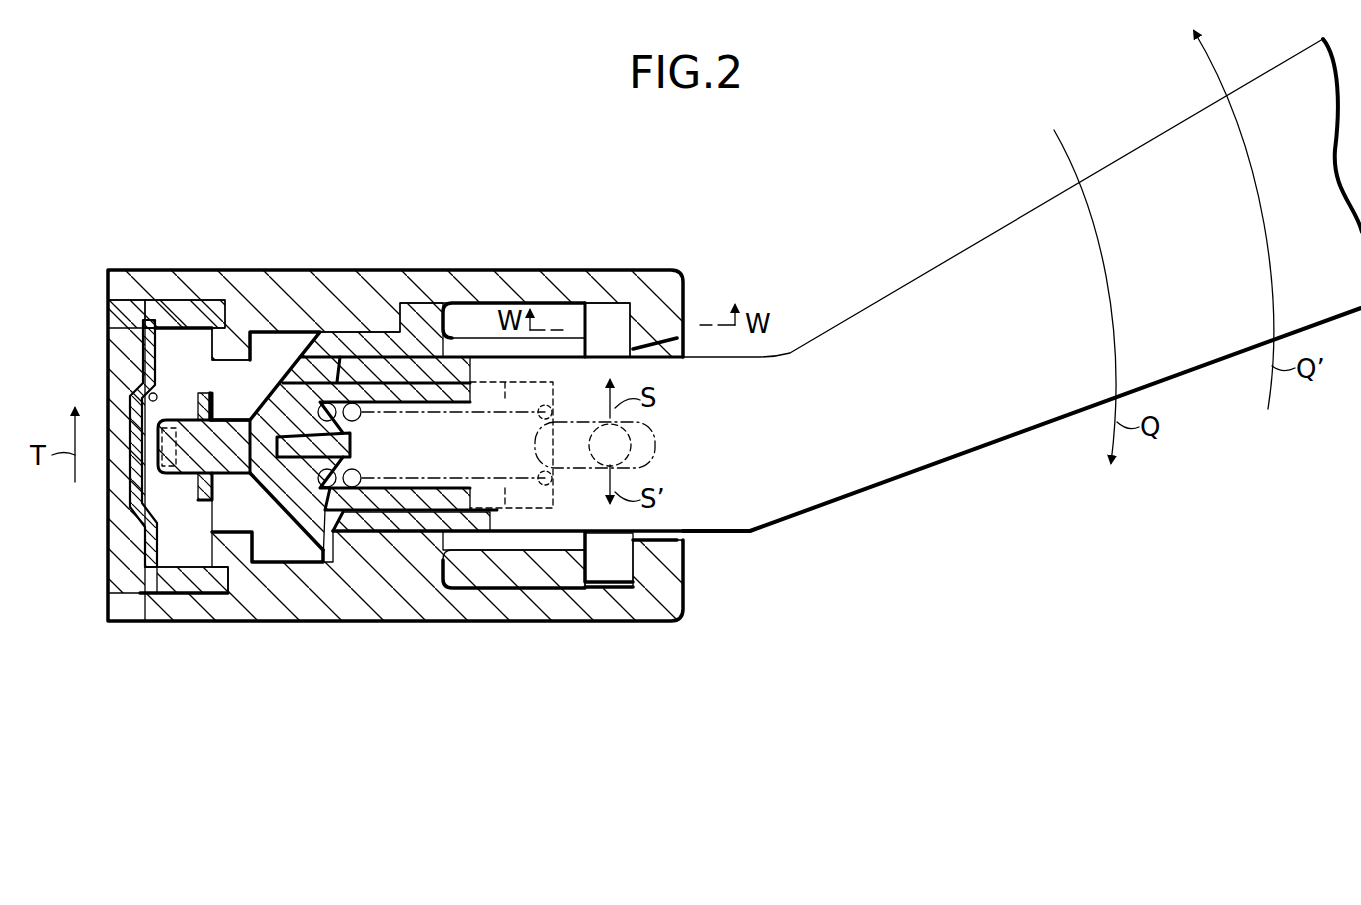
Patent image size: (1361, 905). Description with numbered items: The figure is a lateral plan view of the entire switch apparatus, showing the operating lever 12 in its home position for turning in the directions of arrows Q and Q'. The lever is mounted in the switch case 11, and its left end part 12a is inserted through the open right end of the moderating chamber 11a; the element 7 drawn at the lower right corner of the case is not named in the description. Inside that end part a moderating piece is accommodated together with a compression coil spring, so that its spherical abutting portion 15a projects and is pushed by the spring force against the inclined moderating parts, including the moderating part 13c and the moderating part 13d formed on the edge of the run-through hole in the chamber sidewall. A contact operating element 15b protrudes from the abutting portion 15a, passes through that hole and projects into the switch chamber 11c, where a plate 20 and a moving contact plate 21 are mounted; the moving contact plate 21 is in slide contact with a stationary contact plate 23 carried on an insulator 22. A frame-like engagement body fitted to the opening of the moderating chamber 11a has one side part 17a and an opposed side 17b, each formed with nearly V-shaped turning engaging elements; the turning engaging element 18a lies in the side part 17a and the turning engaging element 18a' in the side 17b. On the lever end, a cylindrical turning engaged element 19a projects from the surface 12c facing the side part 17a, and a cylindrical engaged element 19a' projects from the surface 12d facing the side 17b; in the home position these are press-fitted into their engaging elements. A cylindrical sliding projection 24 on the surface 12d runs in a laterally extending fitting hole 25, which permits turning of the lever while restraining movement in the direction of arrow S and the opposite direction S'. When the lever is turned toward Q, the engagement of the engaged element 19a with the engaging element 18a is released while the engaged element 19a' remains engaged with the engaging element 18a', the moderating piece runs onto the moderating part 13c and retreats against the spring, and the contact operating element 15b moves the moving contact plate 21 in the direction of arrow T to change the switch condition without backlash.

The shaft support 7 is at (685, 556).
The switch case 11 is at (165, 270).
The moderating chamber 11a is at (430, 345).
The switch chamber 11c is at (192, 340).
The operating lever 12 is at (888, 297).
The end part of the operating lever 12a is at (405, 600).
The surface of the end part of the operating lever 12c is at (480, 600).
The surface of the end part of the operating lever 12d is at (475, 300).
The moderating part 13c is at (350, 300).
The moderating part 13d is at (333, 560).
The abutting portion 15a is at (283, 513).
The contact operating element 15b is at (135, 485).
The side part of the engagement body 17a is at (688, 600).
The side of the engagement body 17b is at (687, 313).
The turning engaging element 18a is at (616, 617).
The turning engaging element 18a' is at (625, 287).
The turning engaged element 19a is at (520, 612).
The engaged element 19a' is at (520, 278).
The plate 20 is at (217, 567).
The moving contact plate 21 is at (193, 500).
The insulator 22 is at (108, 318).
The stationary contact plate 23 is at (143, 373).
The sliding projection 24 is at (650, 455).
The fitting hole 25 is at (635, 437).